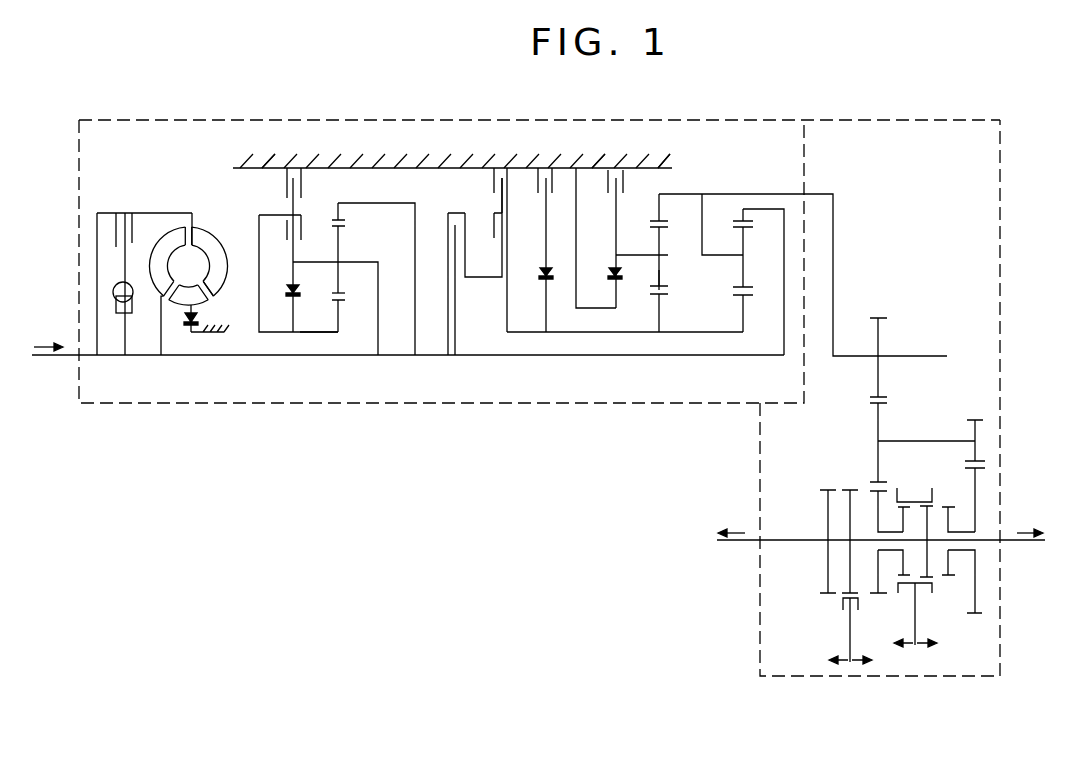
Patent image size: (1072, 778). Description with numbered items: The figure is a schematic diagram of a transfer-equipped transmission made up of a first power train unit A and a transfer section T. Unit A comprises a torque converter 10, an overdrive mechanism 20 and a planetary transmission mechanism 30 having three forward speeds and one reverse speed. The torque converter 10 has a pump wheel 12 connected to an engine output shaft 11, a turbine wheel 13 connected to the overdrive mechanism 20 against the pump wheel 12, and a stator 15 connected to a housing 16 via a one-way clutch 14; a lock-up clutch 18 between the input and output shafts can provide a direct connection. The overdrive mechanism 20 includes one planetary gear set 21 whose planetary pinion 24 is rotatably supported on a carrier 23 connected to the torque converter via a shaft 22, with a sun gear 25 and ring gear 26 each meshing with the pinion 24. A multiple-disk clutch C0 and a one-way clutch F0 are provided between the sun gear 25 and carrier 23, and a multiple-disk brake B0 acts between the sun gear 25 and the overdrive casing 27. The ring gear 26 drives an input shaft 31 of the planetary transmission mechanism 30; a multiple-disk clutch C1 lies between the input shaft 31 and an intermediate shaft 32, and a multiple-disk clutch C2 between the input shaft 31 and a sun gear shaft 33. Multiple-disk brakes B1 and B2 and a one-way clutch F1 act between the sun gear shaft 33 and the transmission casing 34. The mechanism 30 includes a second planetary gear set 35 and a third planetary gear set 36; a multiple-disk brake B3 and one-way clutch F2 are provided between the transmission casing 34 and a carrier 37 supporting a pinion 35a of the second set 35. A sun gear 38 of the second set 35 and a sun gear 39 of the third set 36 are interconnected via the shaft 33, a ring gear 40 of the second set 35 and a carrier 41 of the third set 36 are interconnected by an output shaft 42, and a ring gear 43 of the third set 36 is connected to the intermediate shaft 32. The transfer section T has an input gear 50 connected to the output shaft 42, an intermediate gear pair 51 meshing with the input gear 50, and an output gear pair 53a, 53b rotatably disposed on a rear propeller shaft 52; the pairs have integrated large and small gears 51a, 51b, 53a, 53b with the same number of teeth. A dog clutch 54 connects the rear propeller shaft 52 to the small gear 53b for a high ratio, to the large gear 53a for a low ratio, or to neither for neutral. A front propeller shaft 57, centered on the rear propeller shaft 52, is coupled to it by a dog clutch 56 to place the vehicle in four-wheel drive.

The torque converter 10 is at (150, 212).
The engine output shaft 11 is at (60, 357).
The pump wheel 12 is at (215, 247).
The turbine wheel 13 is at (133, 306).
The one-way clutch 14 is at (183, 324).
The stator 15 is at (207, 296).
The housing 16 is at (224, 334).
The lock-up clutch 18 is at (116, 234).
The overdrive mechanism 20 is at (318, 166).
The planetary gear set 21 is at (343, 262).
The shaft 22 is at (270, 358).
The carrier 23 is at (351, 303).
The planetary pinion 24 is at (334, 291).
The sun gear 25 is at (334, 333).
The ring gear 26 is at (366, 203).
The overdrive casing 27 is at (272, 165).
The planetary transmission mechanism 30 is at (608, 165).
The input shaft 31 is at (425, 358).
The intermediate shaft 32 is at (650, 358).
The sun gear shaft 33 is at (701, 332).
The transmission casing 34 is at (660, 165).
The second planetary gear set 35 is at (672, 223).
The pinion 35a is at (662, 280).
The third planetary gear set 36 is at (757, 226).
The carrier 37 is at (651, 256).
The sun gear 38 is at (657, 317).
The sun gear 39 is at (744, 317).
The ring gear 40 is at (652, 212).
The carrier 41 is at (723, 256).
The output shaft 42 is at (835, 210).
The ring gear 43 is at (760, 208).
The input gear 50 is at (880, 335).
The intermediate gear pair 51 is at (880, 420).
The large gear 51a is at (878, 459).
The small gear 51b is at (976, 452).
The rear propeller shaft 52 is at (1010, 543).
The large gear 53a is at (978, 493).
The small gear 53b is at (872, 496).
The dog clutch 54 is at (933, 585).
The dog clutch 56 is at (842, 601).
The front propeller shaft 57 is at (724, 543).
The power transmission assembly/first power train unit A is at (480, 405).
The transfer section T is at (1002, 375).
The multiple-disk brake B0 is at (304, 250).
The multiple-disk brake B1 is at (490, 250).
The multiple-disk brake B2 is at (534, 250).
The multiple-disk brake B3 is at (610, 238).
The multiple-disk clutch C0 is at (298, 273).
The multiple-disk clutch C1 is at (464, 266).
The multiple-disk clutch C2 is at (512, 225).
The one-way clutch F0 is at (279, 291).
The one-way clutch F1 is at (535, 276).
The one-way clutch F2 is at (602, 276).